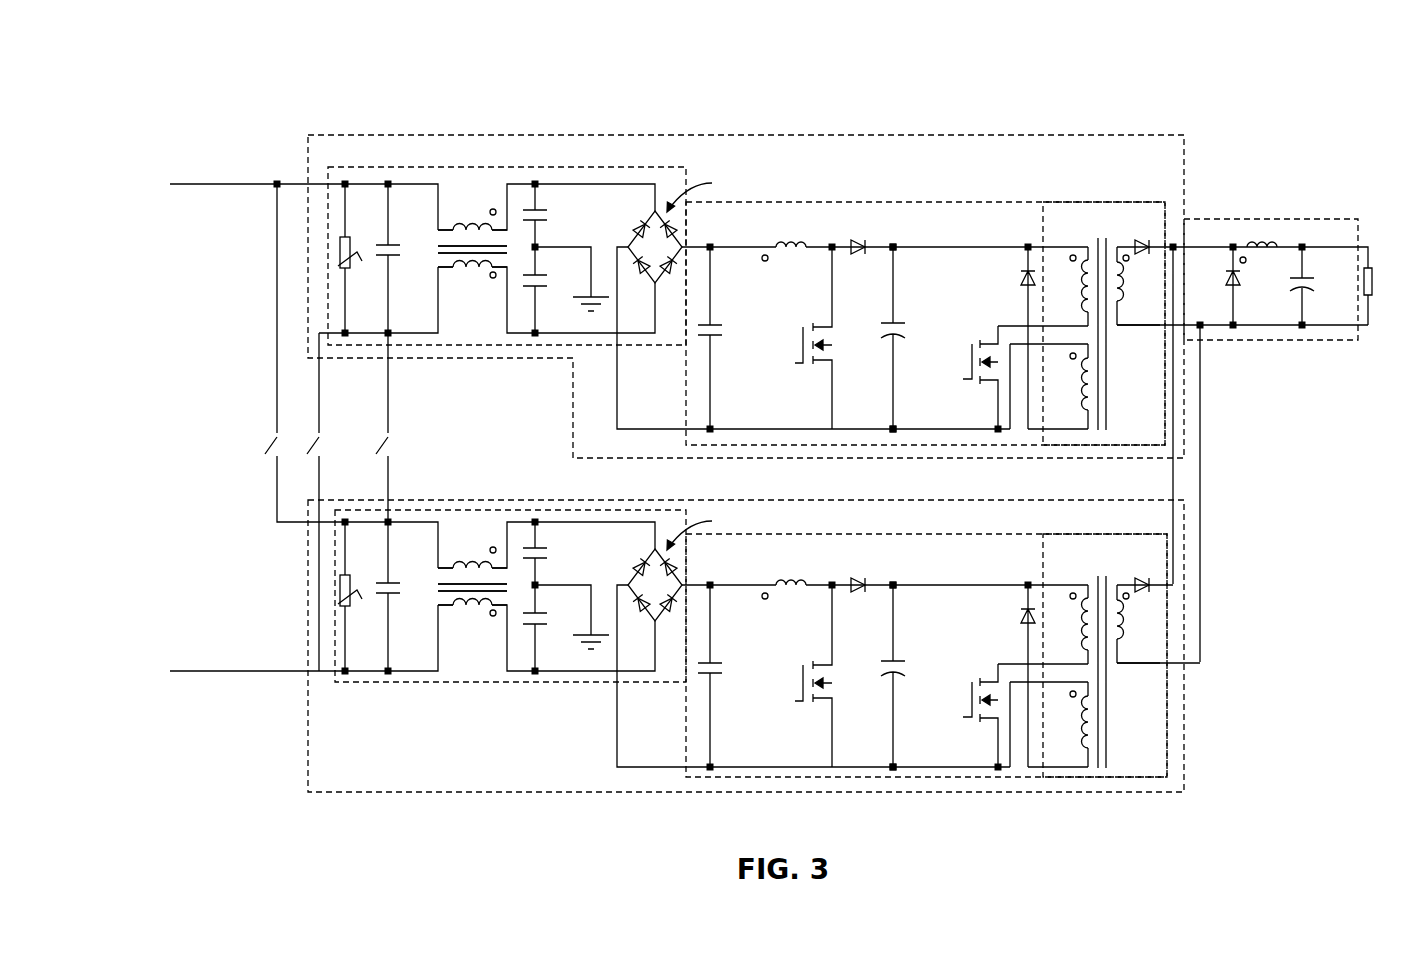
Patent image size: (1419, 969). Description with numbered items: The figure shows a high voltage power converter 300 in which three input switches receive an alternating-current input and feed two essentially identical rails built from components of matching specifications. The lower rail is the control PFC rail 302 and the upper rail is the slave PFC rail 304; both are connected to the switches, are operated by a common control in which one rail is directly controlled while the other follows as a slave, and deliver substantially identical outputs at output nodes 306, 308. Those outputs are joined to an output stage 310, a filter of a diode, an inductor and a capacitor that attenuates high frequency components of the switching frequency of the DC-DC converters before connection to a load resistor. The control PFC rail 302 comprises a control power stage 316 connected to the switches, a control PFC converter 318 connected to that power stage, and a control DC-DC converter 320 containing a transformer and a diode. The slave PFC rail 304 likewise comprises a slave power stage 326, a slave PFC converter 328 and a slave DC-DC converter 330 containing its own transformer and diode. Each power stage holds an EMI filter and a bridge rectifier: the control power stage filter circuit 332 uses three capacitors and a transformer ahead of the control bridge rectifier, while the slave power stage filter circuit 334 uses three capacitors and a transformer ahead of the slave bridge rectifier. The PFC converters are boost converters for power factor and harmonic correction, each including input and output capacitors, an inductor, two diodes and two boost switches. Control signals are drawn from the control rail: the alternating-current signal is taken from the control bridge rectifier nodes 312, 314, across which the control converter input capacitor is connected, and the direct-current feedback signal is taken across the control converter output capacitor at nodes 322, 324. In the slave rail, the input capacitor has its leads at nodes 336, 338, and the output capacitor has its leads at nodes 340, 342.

The high voltage power converter 300 is at (294, 72).
The control PFC rail 302 is at (1187, 512).
The slave PFC rail 304 is at (663, 135).
The output node 306 is at (1177, 245).
The output node 308 is at (1202, 327).
The output stage 310 is at (1330, 219).
The BR2 node 312 is at (713, 586).
The BR2 node 314 is at (713, 766).
The control power stage 316 is at (408, 682).
The control PFC converter 318 is at (905, 534).
The control DC-DC converter 320 is at (1095, 533).
The node 322 is at (896, 586).
The node 324 is at (896, 766).
The slave power stage 326 is at (400, 167).
The slave PFC converter 328 is at (860, 202).
The slave DC-DC converter 330 is at (1113, 202).
The control power stage filter circuit 332 is at (470, 672).
The slave power stage filter circuit 334 is at (444, 328).
The node 336 is at (713, 248).
The node 338 is at (713, 428).
The node 340 is at (896, 248).
The node 342 is at (896, 428).